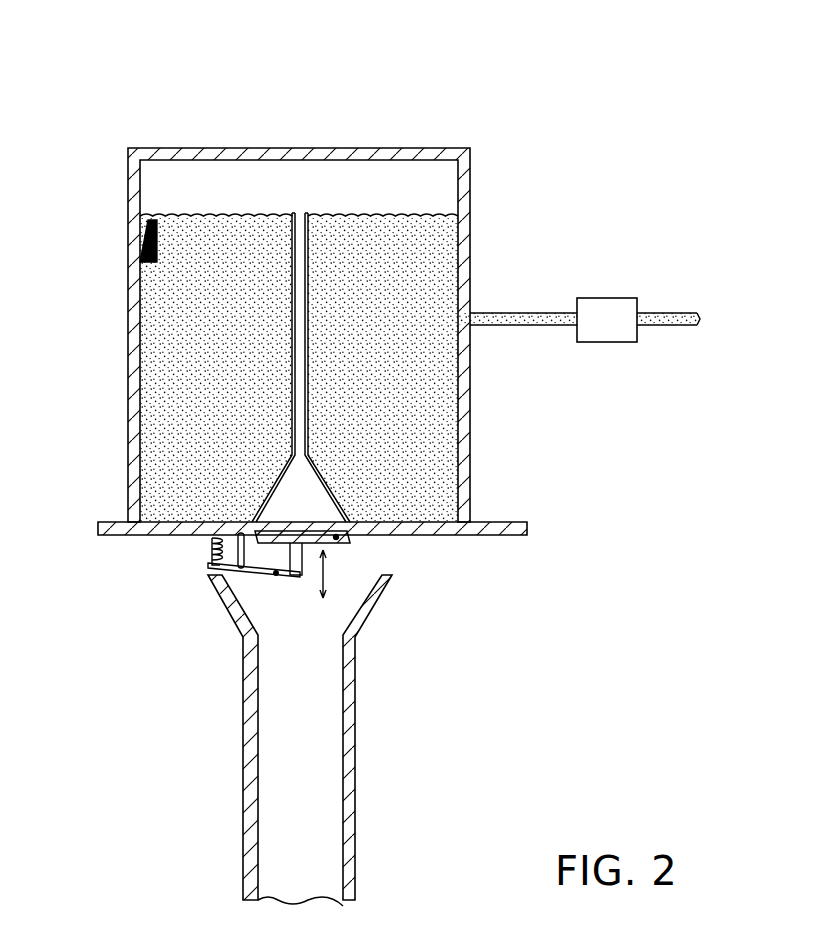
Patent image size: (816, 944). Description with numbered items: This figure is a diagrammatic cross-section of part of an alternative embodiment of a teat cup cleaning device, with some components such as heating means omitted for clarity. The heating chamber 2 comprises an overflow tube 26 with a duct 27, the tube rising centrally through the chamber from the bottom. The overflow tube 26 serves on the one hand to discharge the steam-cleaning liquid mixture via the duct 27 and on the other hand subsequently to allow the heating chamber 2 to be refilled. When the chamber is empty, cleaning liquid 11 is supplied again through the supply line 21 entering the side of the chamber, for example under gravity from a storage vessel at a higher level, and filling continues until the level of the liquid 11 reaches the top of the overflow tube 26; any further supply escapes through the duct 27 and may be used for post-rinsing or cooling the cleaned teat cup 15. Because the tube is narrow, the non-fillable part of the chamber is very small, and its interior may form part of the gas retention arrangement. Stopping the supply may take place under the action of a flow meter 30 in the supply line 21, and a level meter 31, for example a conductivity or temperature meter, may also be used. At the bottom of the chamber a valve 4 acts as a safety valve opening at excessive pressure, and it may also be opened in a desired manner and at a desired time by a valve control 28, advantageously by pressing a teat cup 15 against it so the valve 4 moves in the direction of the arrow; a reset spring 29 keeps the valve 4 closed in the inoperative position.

The heating chamber 2 is at (428, 153).
The valve 4 is at (343, 540).
The cleaning liquid 11 is at (250, 372).
The teat cup 15 is at (349, 745).
The supply line 21 is at (517, 320).
The overflow tube 26 is at (293, 247).
The duct 27 is at (299, 213).
The valve control 28 is at (276, 573).
The reset spring 29 is at (210, 549).
The flow meter 30 is at (604, 320).
The level meter 31 is at (141, 245).